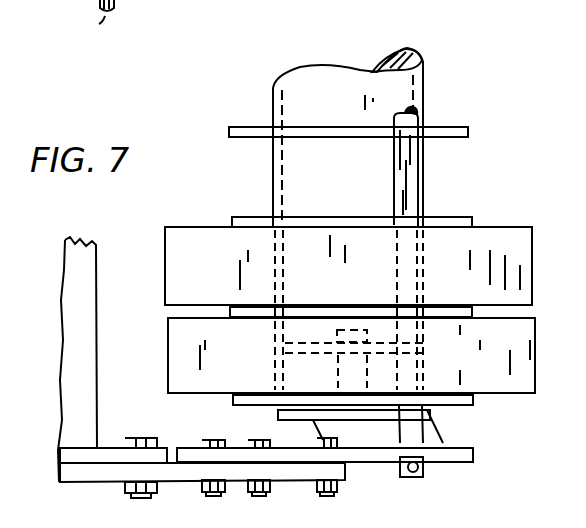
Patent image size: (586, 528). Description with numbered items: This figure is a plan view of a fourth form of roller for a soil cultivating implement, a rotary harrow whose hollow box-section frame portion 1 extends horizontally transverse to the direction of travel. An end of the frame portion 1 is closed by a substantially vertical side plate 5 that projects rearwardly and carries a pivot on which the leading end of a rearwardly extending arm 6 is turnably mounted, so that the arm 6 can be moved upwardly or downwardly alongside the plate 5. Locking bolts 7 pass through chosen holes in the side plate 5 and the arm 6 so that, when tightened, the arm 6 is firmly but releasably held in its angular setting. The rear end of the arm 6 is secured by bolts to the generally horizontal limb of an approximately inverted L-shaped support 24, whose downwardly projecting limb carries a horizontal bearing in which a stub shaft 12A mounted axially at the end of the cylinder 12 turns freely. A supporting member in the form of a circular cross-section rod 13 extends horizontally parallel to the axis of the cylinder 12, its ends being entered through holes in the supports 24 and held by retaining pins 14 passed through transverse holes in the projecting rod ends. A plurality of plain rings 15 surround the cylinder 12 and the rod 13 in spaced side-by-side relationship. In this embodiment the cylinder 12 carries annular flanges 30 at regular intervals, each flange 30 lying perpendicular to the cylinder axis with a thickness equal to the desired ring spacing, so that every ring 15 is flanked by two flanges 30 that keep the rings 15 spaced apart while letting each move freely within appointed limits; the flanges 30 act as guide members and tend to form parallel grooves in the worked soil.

The hollow box-section frame portion 1 is at (85, 392).
The side plate 5 is at (108, 457).
The arm 6 is at (105, 475).
The locking bolt 7 is at (138, 500).
The cylinder 12 is at (293, 82).
The stub shaft 12A is at (362, 315).
The rod 13 is at (412, 193).
The retaining pin 14 is at (418, 467).
The plain ring 15 is at (183, 333).
The support 24 is at (387, 455).
The annular flange 30 is at (243, 220).